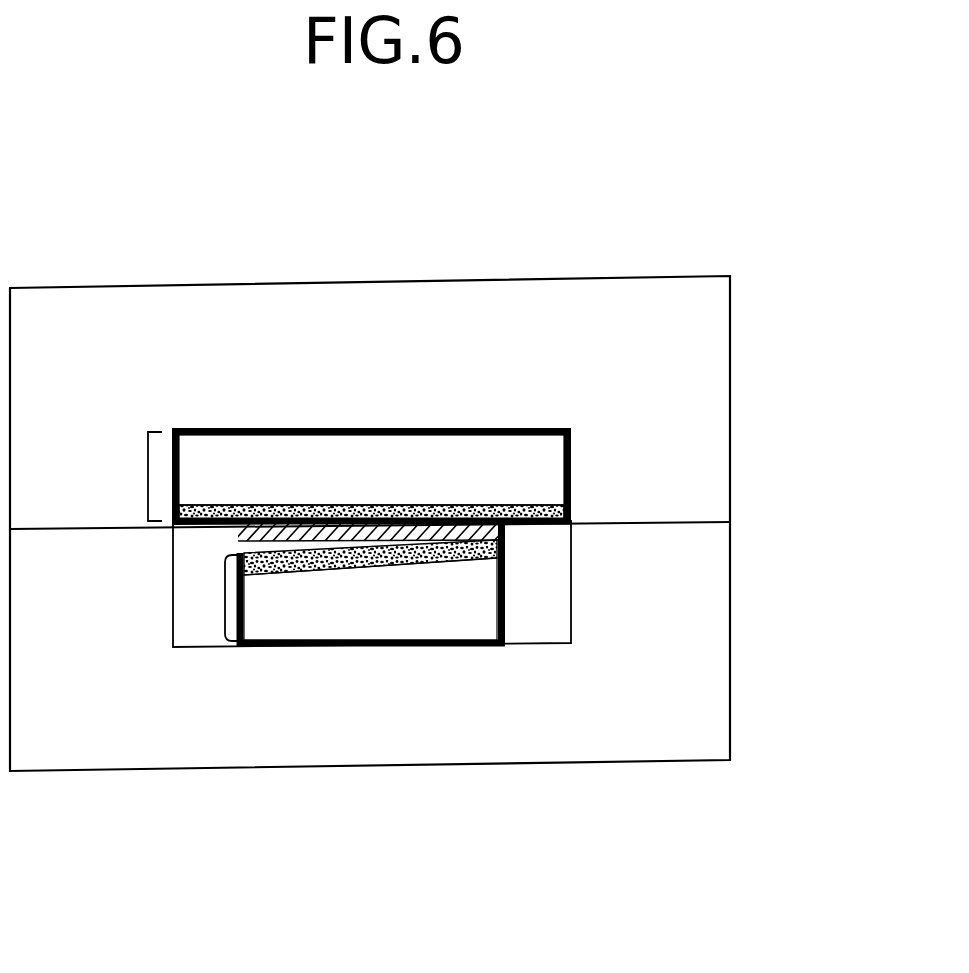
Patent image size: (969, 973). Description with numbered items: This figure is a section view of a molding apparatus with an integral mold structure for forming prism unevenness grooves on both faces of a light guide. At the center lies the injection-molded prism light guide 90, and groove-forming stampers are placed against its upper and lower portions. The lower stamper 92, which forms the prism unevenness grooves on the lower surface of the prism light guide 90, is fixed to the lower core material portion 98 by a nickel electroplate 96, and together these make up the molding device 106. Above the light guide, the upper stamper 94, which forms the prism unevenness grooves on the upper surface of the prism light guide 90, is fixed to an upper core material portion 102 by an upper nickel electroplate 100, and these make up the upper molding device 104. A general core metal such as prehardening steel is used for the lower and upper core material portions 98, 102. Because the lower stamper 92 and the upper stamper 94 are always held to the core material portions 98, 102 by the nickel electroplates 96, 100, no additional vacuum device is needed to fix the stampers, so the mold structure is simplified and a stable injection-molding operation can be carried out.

The prism light guide 90 is at (270, 505).
The lower stamper 92 is at (415, 556).
The upper stamper 94 is at (374, 506).
The nickel electroplate 96 is at (507, 572).
The core material portion 98 is at (467, 600).
The upper nickel electroplate 100 is at (572, 447).
The upper core material portion 102 is at (500, 465).
The upper molding device 104 is at (148, 472).
The molding device 106 is at (225, 598).